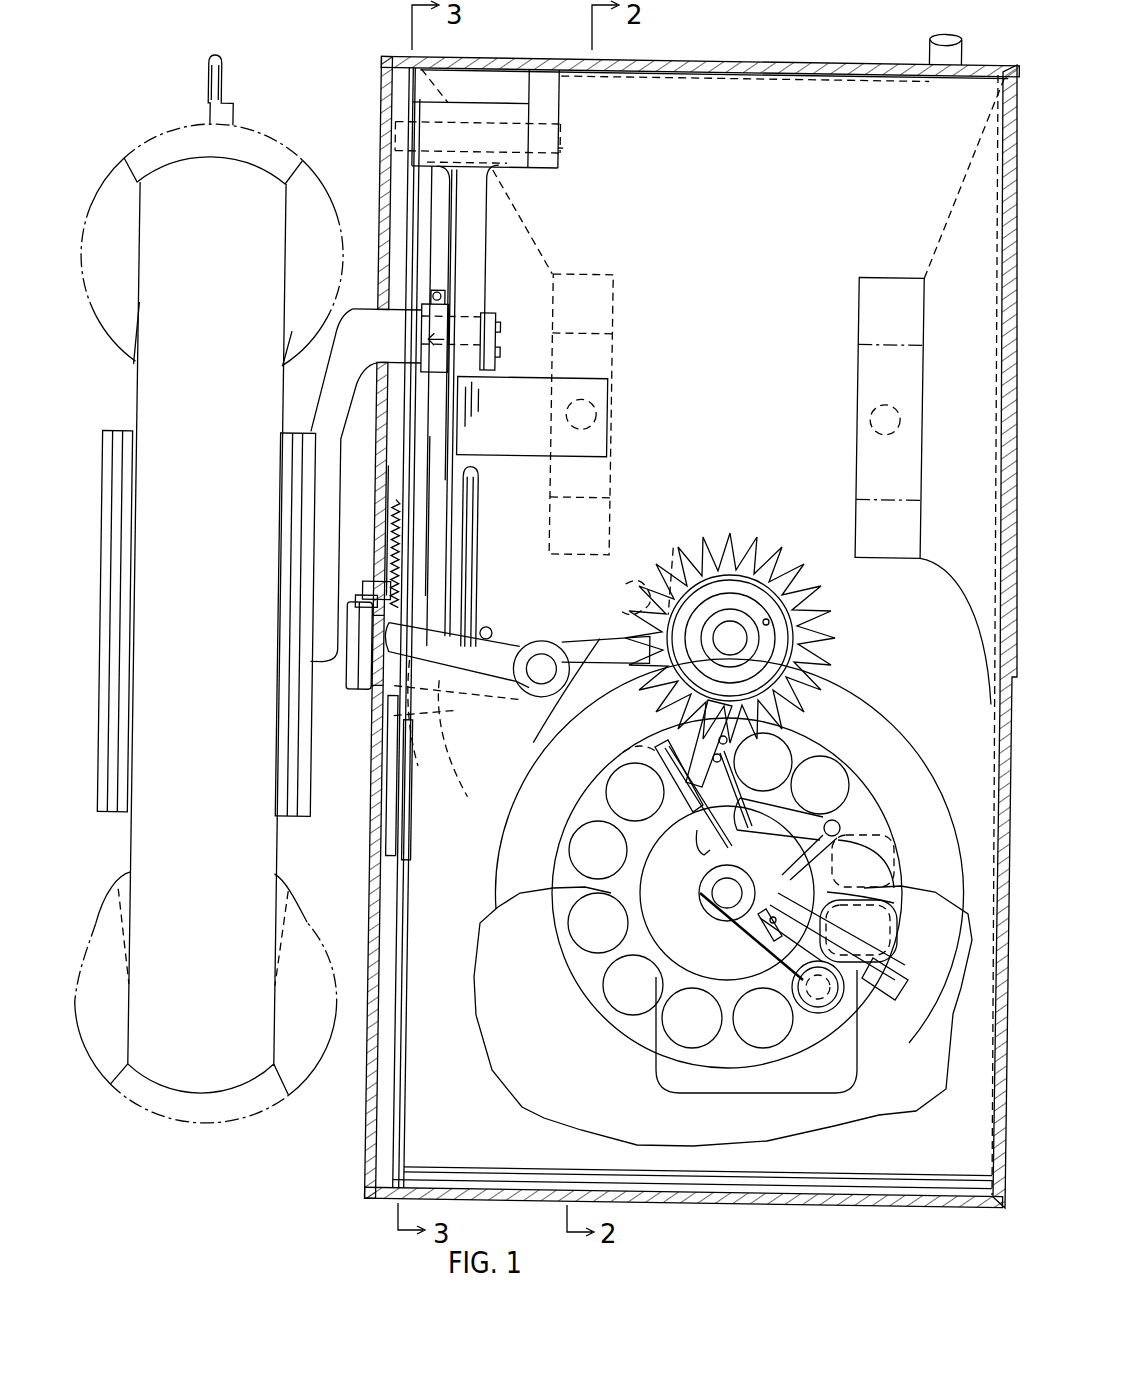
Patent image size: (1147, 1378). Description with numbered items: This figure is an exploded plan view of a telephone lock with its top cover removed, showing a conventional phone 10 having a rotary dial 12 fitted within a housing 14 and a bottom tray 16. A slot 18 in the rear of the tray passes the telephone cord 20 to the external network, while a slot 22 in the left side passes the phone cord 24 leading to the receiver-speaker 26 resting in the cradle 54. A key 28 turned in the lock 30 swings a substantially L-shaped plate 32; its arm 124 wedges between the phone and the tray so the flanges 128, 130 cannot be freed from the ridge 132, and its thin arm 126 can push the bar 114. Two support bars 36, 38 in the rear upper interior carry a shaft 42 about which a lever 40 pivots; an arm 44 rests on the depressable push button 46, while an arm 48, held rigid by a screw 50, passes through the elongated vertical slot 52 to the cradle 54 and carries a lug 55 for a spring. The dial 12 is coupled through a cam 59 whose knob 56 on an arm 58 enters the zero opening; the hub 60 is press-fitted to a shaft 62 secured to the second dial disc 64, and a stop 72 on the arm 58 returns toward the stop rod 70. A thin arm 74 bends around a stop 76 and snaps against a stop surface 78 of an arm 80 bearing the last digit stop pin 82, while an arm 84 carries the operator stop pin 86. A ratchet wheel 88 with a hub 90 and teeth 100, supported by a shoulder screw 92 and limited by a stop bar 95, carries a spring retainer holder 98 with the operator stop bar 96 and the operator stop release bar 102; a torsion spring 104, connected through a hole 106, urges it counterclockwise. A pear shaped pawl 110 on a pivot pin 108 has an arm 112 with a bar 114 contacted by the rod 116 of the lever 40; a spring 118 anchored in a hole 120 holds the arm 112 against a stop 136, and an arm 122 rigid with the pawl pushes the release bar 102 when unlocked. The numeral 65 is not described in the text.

The conventional phone 10 is at (950, 212).
The rotary dial 12 is at (755, 1062).
The housing 14 is at (745, 1200).
The bottom tray 16 is at (677, 1184).
The slot 18 is at (921, 58).
The telephone cord 20 is at (953, 50).
The slot 22 is at (367, 600).
The phone cord 24 is at (232, 110).
The receiver-speaker 26 is at (360, 165).
The key 28 is at (348, 668).
The lock 30 is at (362, 694).
The L-shaped plate 32 is at (424, 712).
The support bar 36 is at (553, 108).
The support bar 38 is at (392, 90).
The lever 40 is at (462, 105).
The shaft 42 is at (556, 152).
The arm 44 is at (583, 383).
The push button 46 is at (594, 428).
The arm 48 is at (400, 322).
The screw 50 is at (491, 325).
The elongated vertical slot 52 is at (362, 312).
The cradle 54 is at (292, 812).
The lug 55 is at (443, 295).
The knob 56 is at (816, 1013).
The arm 58 is at (765, 950).
The cam 59 is at (772, 884).
The hub 60 is at (712, 902).
The shaft 62 is at (716, 921).
The second dial disc 64 is at (729, 867).
The arm tip 65 is at (868, 1000).
The stop rod 70 is at (856, 913).
The stop 72 is at (757, 938).
The thin arm 74 is at (693, 810).
The stop 76 is at (697, 856).
The stop surface 78 is at (715, 812).
The arm 80 is at (875, 834).
The stop pin 82 is at (838, 826).
The arm 84 is at (892, 904).
The operator stop pin 86 is at (892, 873).
The ratchet wheel 88 is at (815, 628).
The hub 90 is at (715, 627).
The shoulder screw 92 is at (737, 628).
The stop bar 95 is at (842, 757).
The operator stop bar 96 is at (663, 749).
The spring retainer holder 98 is at (838, 638).
The teeth 100 is at (833, 650).
The operator stop release bar 102 is at (623, 576).
The torsion spring 104 is at (845, 662).
The hole 106 is at (672, 725).
The pivot pin 108 is at (535, 745).
The pawl 110 is at (570, 692).
The arm 112 is at (505, 634).
The bar 114 is at (507, 600).
The rod 116 is at (457, 571).
The spring 118 is at (394, 538).
The hole 120 is at (397, 510).
The arm 122 is at (672, 553).
The arm 124 is at (415, 531).
The arm 126 is at (430, 504).
The flange 128 is at (395, 475).
The flange 130 is at (386, 720).
The ridge 132 is at (392, 409).
The stop 136 is at (492, 630).